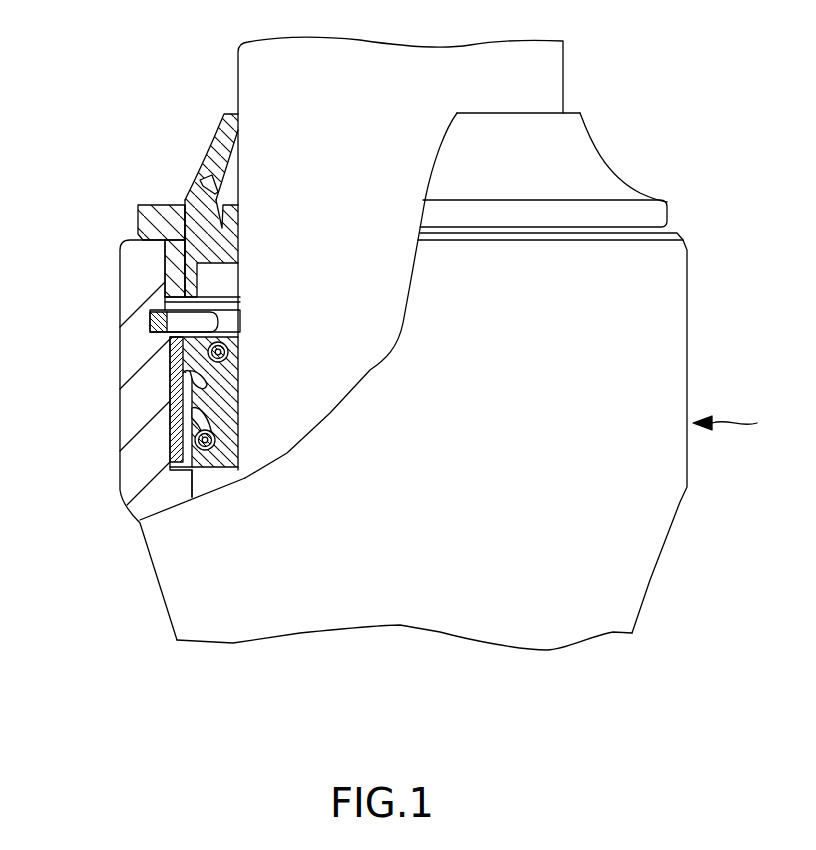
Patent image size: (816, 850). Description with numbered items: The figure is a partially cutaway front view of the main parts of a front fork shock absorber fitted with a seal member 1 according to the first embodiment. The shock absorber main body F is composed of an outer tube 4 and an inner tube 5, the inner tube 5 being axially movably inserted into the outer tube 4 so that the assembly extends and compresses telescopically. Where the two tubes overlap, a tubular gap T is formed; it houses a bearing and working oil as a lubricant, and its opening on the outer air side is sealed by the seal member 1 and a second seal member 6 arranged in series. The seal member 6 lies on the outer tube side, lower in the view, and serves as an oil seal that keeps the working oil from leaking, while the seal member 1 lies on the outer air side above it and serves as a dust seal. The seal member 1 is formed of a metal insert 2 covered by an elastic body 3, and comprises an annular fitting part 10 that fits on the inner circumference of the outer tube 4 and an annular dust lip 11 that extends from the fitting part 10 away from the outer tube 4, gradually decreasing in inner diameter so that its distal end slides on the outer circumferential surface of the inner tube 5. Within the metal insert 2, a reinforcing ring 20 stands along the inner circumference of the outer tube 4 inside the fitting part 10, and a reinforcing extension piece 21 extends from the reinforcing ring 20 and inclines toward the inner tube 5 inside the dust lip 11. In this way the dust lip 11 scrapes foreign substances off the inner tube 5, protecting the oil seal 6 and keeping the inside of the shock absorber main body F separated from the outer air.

The seal member 1 is at (184, 206).
The metal insert 2 is at (208, 242).
The elastic body 3 is at (163, 207).
The outer tube 4 is at (667, 373).
The inner tube 5 is at (550, 88).
The seal member 6 is at (167, 418).
The fitting part 10 is at (160, 281).
The dust lip 11 is at (242, 145).
The reinforcing ring 20 is at (187, 252).
The reinforcing extension piece 21 is at (217, 186).
The tubular gap T is at (210, 480).
The shock absorber main body F is at (736, 422).